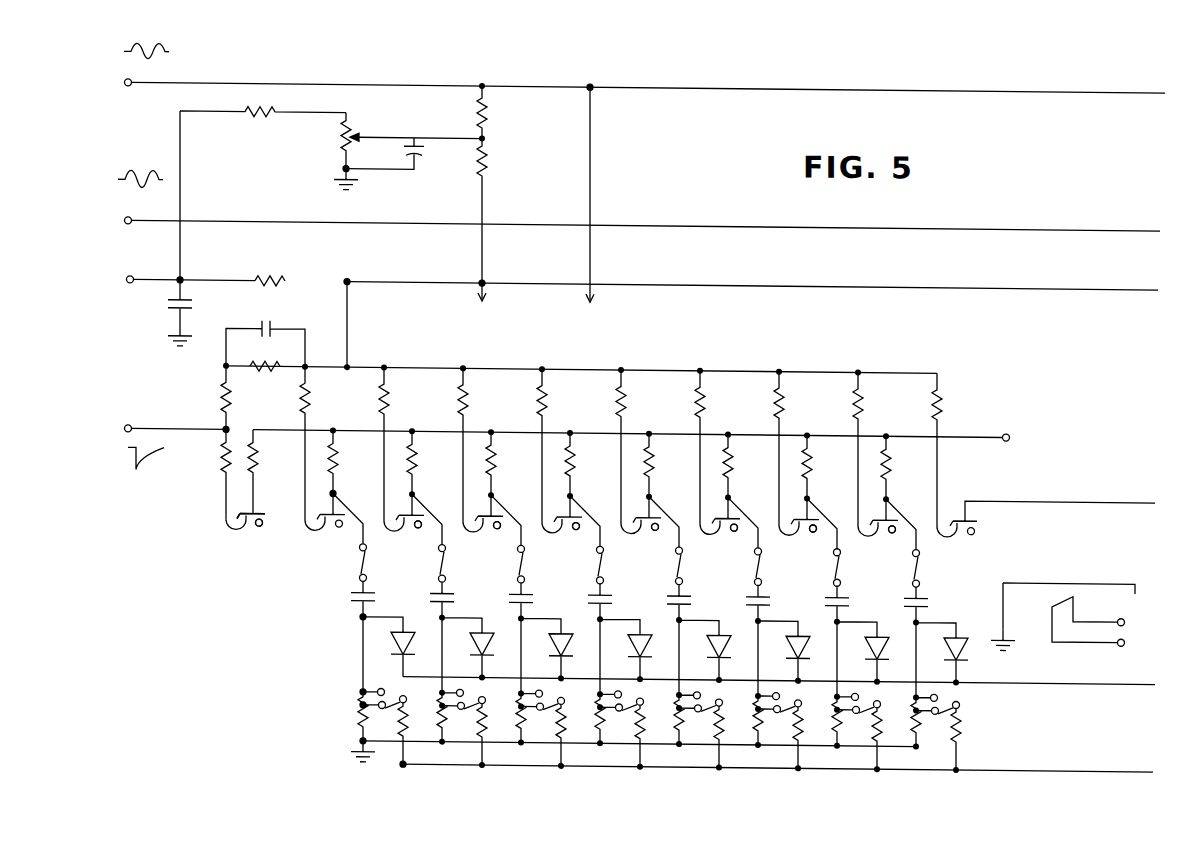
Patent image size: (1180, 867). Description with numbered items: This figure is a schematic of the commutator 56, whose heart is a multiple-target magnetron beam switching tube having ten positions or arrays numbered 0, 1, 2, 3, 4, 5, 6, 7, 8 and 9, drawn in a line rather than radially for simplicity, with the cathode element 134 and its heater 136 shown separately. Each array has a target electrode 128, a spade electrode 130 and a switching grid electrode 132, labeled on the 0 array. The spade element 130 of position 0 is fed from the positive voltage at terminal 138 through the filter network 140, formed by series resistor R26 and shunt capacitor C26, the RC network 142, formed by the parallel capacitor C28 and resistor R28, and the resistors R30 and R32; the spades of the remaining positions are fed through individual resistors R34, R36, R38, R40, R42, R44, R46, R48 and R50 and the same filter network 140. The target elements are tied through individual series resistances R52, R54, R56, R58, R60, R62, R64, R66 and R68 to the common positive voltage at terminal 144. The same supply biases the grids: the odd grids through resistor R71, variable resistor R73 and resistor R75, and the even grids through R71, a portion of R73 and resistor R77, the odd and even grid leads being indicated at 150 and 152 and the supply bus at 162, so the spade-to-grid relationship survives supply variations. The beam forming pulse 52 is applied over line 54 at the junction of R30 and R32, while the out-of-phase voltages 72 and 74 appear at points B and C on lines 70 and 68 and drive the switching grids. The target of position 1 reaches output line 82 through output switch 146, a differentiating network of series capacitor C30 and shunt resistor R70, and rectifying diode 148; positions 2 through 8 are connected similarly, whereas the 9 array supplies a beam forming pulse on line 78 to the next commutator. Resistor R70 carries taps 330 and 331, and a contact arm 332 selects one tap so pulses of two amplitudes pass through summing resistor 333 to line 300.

The line C 68 is at (180, 83).
The out-of-phase voltage 74 is at (169, 46).
The line B 70 is at (172, 221).
The out-of-phase voltage 72 is at (146, 175).
The resistor R71 is at (264, 112).
The variable resistor R73 is at (340, 132).
The resistor R77 is at (490, 109).
The resistor R75 is at (490, 171).
The lead to odd grids 150 is at (482, 259).
The lead to even grids 152 is at (590, 258).
The terminal 138 is at (132, 282).
The +108V supply line 162 is at (1126, 278).
The series resistor R26 is at (276, 274).
The shunt capacitor C26 is at (172, 302).
The filter network 140 is at (236, 301).
The commutator 56 is at (734, 333).
The capacitor C28 is at (277, 324).
The RC network 142 is at (258, 351).
The resistor R28 is at (256, 370).
The resistor R30 is at (229, 410).
The line 54 is at (190, 430).
The beam forming pulse 52 is at (148, 454).
The resistor R32 is at (220, 474).
The spade electrode 130 is at (234, 535).
The series resistance R52 is at (255, 462).
The target electrode 128 is at (264, 508).
The switching grid electrode 132 is at (262, 523).
The position 0 array 0 is at (242, 499).
The terminal 144 is at (1007, 431).
The resistor R34 is at (309, 397).
The resistor R36 is at (388, 397).
The resistor R38 is at (467, 397).
The resistor R40 is at (546, 397).
The resistor R42 is at (625, 397).
The resistor R44 is at (704, 397).
The resistor R46 is at (783, 397).
The resistor R48 is at (862, 397).
The resistor R50 is at (941, 397).
The position 1 array 1 is at (322, 499).
The position 2 array 2 is at (401, 499).
The position 3 array 3 is at (480, 499).
The position 4 array 4 is at (559, 499).
The position 5 array 5 is at (638, 499).
The position 6 array 6 is at (717, 499).
The position 7 array 7 is at (796, 499).
The position 8 array 8 is at (875, 499).
The position 9 array 9 is at (954, 499).
The series resistance R54 is at (336, 462).
The series resistance R56 is at (415, 462).
The series resistance R58 is at (494, 462).
The series resistance R60 is at (573, 462).
The series resistance R62 is at (652, 462).
The series resistance R64 is at (731, 462).
The series resistance R66 is at (810, 462).
The series resistance R68 is at (889, 462).
The output switch 146 is at (360, 562).
The series capacitor C30 is at (351, 595).
The rectifying diode 148 is at (396, 633).
The differentiating resistor R70 is at (358, 710).
The tap 330 is at (384, 679).
The tap 331 is at (386, 705).
The contact arm 332 is at (398, 692).
The summing resistor 333 is at (405, 708).
The output line 82 is at (1122, 672).
The line 300 is at (1060, 762).
The line 78 is at (1118, 490).
The cathode element 134 is at (1084, 573).
The heater 136 is at (1114, 633).